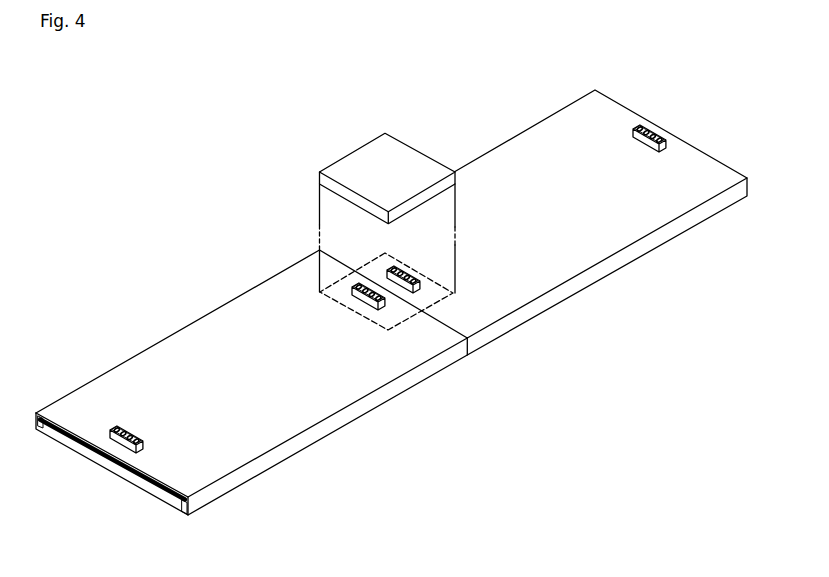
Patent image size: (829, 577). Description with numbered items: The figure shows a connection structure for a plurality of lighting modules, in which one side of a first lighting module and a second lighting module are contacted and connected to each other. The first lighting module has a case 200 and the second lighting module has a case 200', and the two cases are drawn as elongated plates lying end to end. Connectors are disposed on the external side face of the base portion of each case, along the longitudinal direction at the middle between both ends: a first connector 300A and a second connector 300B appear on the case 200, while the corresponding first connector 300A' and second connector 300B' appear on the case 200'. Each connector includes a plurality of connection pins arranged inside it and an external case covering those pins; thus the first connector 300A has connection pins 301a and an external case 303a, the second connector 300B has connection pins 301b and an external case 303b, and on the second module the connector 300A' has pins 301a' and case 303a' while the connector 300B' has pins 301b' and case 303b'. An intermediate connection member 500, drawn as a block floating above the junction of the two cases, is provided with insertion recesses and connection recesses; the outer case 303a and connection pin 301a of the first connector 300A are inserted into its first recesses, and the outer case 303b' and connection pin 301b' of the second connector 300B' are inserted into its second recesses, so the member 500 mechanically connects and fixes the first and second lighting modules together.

The case 200 is at (534, 222).
The case 200' is at (251, 382).
The intermediate connection member 500 is at (385, 157).
The first connector 300A is at (462, 261).
The connection pin 301a is at (438, 275).
The external case 303a is at (439, 256).
The second connector 300B is at (677, 114).
The connection pin 301b is at (655, 122).
The external case 303b is at (673, 127).
The first connector 300A' is at (150, 410).
The connector body 301a' is at (151, 424).
The connector terminals 303a' is at (125, 419).
The second connector 300B' is at (368, 333).
The connection pin 301b' is at (382, 319).
The outer case 303b' is at (353, 320).